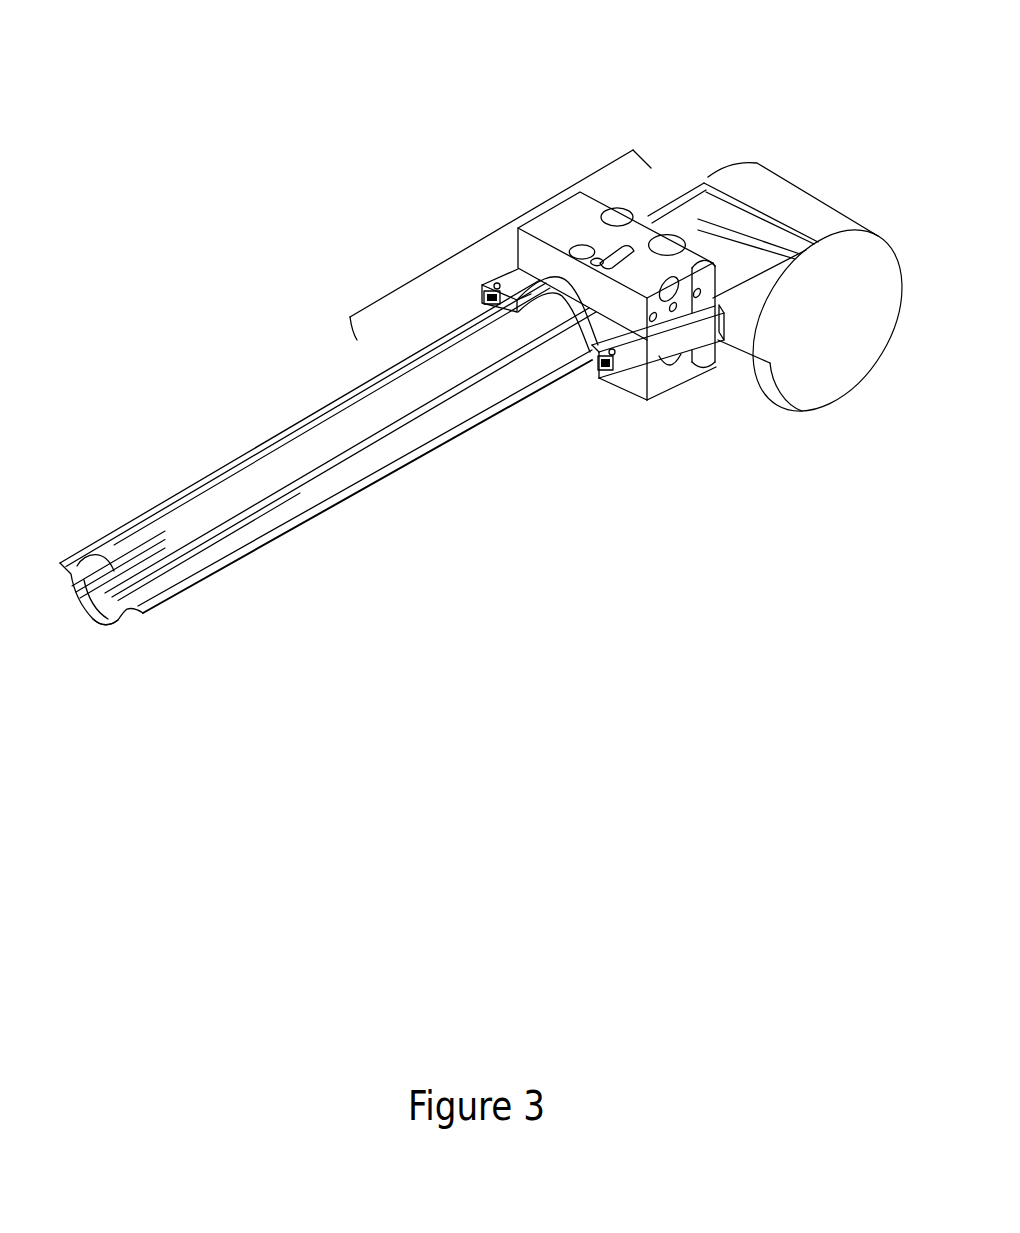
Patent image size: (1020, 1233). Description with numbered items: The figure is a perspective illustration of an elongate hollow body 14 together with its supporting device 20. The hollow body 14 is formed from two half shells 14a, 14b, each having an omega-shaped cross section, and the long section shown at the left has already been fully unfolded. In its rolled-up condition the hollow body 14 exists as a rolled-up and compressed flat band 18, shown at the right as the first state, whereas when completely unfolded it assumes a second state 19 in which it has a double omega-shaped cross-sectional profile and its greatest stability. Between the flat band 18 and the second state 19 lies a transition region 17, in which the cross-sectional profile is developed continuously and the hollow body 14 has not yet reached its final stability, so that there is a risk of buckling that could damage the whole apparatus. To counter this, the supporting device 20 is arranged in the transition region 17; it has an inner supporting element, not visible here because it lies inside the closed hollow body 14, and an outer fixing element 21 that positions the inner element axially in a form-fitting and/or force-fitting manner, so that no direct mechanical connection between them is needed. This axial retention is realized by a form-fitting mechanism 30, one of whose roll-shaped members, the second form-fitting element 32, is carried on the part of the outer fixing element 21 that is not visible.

The hollow body 14 is at (303, 500).
The half shell 14a is at (123, 540).
The half shell 14b is at (105, 622).
The transition region 17 is at (501, 229).
The flat band 18 is at (815, 400).
The second state 19 is at (160, 603).
The supporting device 20 is at (553, 177).
The outer fixing element 21 is at (638, 232).
The form-fitting mechanism 30 is at (594, 452).
The second form-fitting element 32 is at (557, 314).